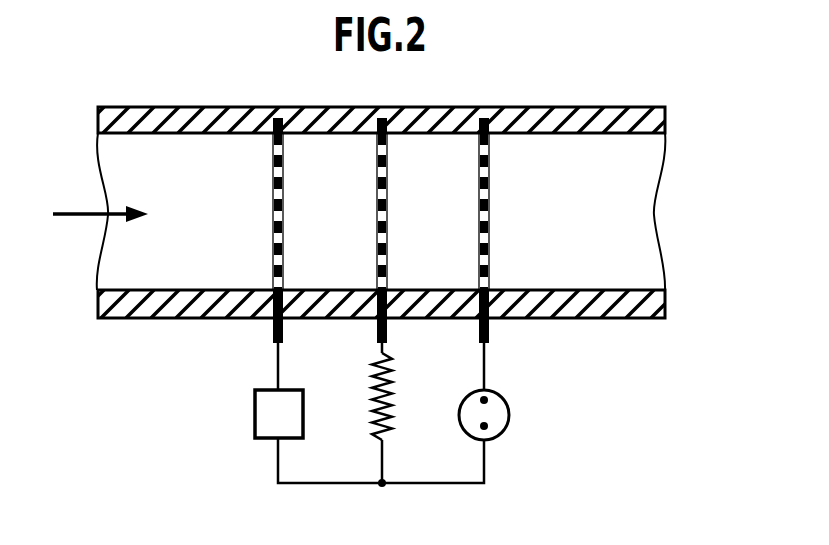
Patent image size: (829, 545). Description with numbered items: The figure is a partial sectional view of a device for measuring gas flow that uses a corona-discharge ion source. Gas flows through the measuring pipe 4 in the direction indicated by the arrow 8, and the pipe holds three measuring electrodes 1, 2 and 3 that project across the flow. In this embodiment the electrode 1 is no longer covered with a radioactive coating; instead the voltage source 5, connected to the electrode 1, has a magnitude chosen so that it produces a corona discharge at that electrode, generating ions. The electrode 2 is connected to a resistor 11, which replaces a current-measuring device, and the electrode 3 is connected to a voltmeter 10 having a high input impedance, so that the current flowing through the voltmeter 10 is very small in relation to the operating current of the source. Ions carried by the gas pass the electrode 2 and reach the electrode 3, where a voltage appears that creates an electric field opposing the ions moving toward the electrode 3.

The measuring electrode 1 is at (273, 198).
The measuring electrode 2 is at (377, 215).
The measuring electrode 3 is at (489, 200).
The measuring pipe 4 is at (158, 113).
The voltage source 5 is at (258, 418).
The flow direction arrow 8 is at (100, 203).
The voltmeter 10 is at (501, 417).
The resistor 11 is at (371, 414).